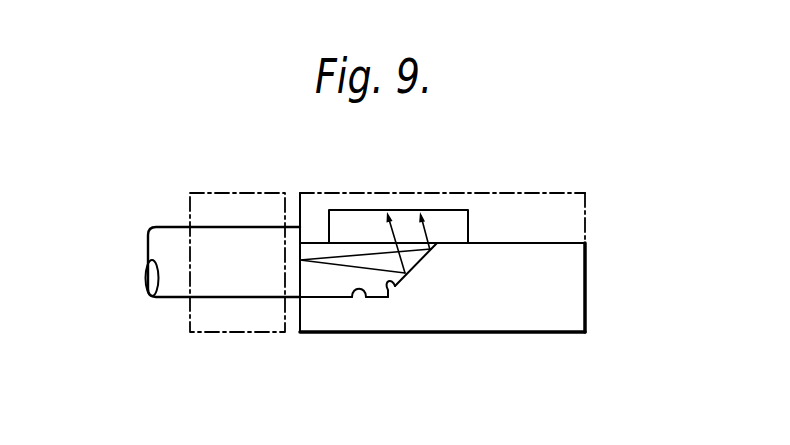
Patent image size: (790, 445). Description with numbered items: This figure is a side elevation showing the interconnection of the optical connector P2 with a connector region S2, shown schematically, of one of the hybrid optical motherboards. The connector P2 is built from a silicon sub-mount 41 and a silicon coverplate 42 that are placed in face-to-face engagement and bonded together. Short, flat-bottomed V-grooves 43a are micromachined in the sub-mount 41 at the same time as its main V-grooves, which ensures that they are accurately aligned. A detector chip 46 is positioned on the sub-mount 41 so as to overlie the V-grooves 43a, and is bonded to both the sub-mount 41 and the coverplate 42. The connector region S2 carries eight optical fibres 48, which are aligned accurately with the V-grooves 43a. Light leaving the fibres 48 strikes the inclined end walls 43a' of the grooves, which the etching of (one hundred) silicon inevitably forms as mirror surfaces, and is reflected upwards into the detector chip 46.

The silicon sub-mount 41 is at (563, 297).
The silicon coverplate 42 is at (548, 193).
The short flat-bottomed V-grooves 43a is at (343, 341).
The inclined end walls 43a' is at (439, 337).
The detector chip 46 is at (355, 217).
The optical fibres 48 is at (163, 243).
The connector region S2 is at (211, 341).
The optical connector P2 is at (601, 225).